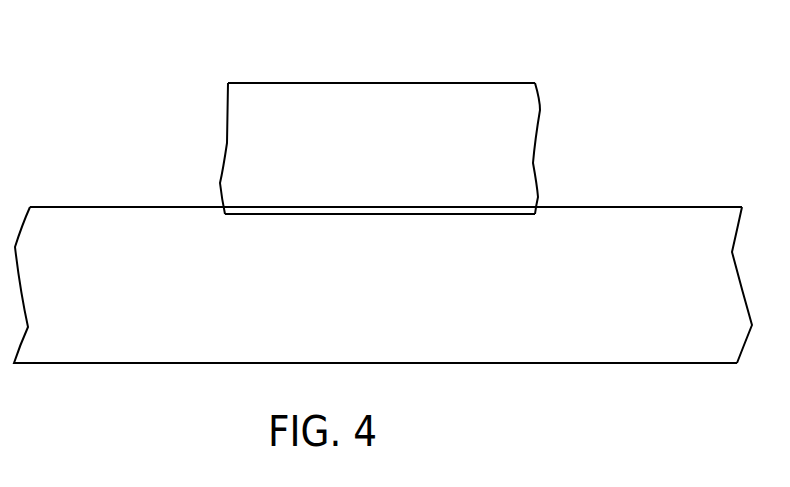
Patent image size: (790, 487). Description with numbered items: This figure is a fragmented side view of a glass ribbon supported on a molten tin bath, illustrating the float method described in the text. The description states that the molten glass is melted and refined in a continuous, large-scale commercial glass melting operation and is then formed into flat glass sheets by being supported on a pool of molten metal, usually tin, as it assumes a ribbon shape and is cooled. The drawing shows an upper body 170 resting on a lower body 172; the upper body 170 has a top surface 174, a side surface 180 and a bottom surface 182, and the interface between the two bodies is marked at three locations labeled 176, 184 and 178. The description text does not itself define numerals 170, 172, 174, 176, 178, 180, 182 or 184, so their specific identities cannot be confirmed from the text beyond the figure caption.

The light guide body 170 is at (419, 113).
The substrate 172 is at (147, 363).
The top surface 174 is at (363, 83).
The first interface region 176 is at (255, 214).
The second interface region 178 is at (447, 207).
The side surface 180 is at (515, 152).
The bottom surface 182 is at (391, 206).
The central interface region 184 is at (355, 214).